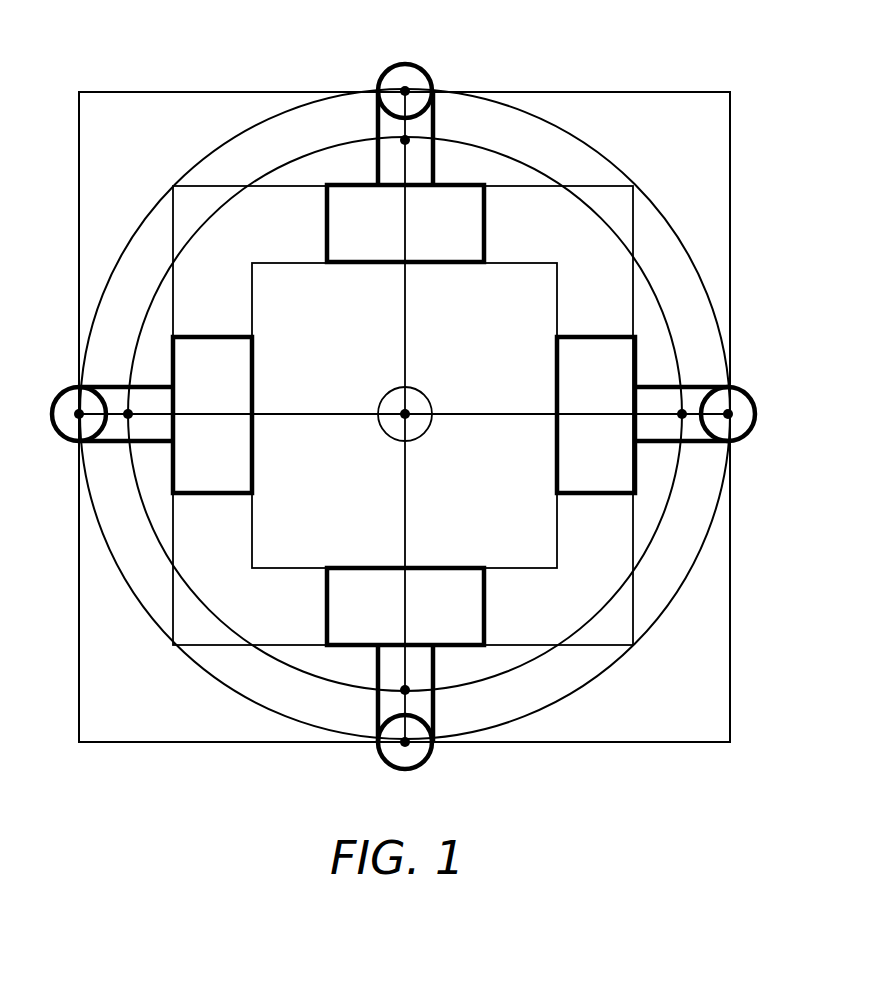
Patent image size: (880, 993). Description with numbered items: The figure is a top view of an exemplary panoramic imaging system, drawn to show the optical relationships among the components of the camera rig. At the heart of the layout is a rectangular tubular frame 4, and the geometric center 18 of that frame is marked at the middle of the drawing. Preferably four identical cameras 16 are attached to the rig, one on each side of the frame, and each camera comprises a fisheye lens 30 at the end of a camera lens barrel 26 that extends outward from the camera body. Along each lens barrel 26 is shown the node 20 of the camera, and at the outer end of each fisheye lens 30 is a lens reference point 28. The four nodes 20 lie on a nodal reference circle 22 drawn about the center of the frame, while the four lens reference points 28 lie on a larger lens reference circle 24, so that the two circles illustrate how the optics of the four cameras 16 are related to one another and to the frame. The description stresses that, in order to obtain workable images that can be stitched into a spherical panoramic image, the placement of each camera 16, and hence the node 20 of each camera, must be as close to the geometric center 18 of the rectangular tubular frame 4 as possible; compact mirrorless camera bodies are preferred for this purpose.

The rectangular tubular frame 4 is at (557, 287).
The camera 16 is at (469, 241).
The geometric center of rectangular tubular frame 18 is at (403, 416).
The node 20 is at (377, 120).
The nodal reference circle 22 is at (675, 478).
The lens reference circle 24 is at (673, 230).
The camera lens barrel 26 is at (437, 128).
The lens reference point 28 is at (408, 86).
The fisheye lens 30 is at (403, 63).